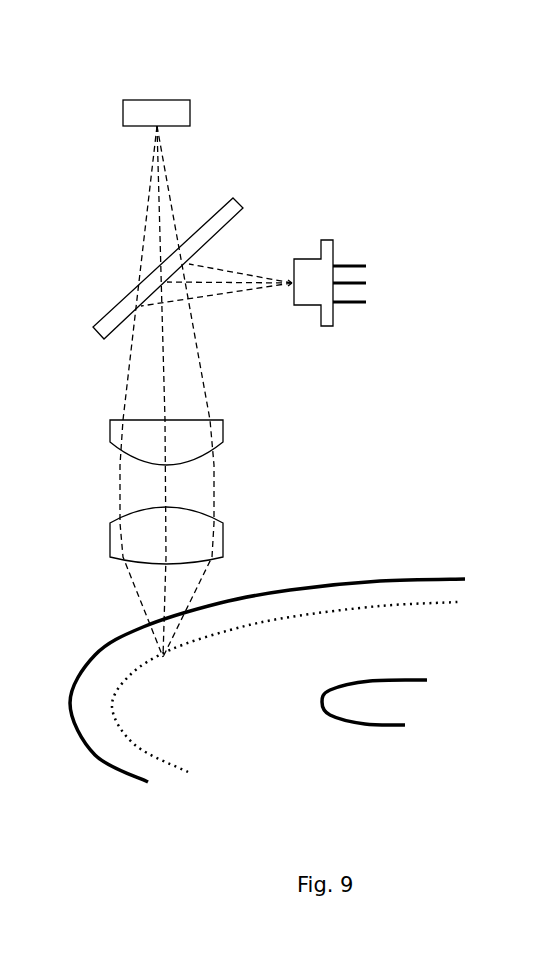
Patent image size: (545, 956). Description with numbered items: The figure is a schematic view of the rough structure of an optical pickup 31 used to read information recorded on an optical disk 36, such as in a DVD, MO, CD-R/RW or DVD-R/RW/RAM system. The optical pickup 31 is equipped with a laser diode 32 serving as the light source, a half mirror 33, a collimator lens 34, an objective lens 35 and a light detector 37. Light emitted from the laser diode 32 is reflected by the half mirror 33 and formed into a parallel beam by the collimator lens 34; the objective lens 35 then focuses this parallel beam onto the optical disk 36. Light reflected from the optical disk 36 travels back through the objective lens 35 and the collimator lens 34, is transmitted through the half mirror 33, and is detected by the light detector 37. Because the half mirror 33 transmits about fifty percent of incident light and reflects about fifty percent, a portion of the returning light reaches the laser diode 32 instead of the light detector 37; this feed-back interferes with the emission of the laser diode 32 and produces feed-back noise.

The optical pickup 31 is at (72, 86).
The laser diode 32 is at (334, 247).
The half mirror 33 is at (238, 203).
The collimator lens 34 is at (223, 432).
The objective lens 35 is at (223, 550).
The optical disk 36 is at (435, 577).
The light detector 37 is at (190, 100).